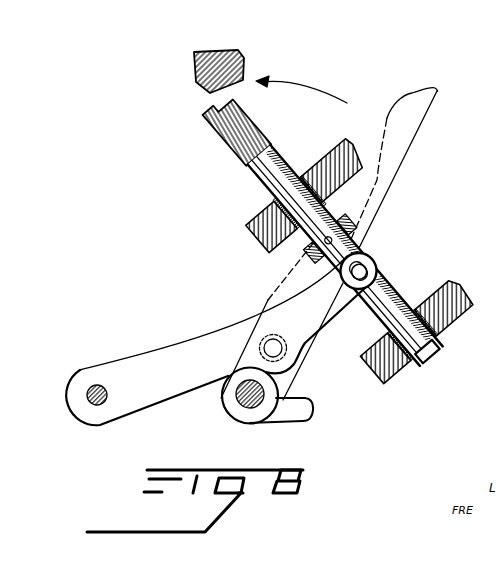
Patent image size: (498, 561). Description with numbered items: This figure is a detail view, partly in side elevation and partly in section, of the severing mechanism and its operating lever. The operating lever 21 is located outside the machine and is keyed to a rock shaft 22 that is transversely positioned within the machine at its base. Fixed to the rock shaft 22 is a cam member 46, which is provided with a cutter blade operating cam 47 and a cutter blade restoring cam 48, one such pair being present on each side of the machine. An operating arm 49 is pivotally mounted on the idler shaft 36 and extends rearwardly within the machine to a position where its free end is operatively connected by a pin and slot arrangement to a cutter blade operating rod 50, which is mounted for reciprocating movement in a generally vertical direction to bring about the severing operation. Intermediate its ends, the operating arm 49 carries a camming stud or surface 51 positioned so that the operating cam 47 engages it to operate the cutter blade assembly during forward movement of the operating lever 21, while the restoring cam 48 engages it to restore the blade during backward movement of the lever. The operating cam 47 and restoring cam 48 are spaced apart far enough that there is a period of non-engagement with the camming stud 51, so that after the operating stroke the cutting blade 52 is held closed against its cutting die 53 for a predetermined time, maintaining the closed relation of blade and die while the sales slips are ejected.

The operating lever 21 is at (383, 185).
The rock shaft 22 is at (240, 397).
The idler shaft 36 is at (95, 397).
The cam member 46 is at (273, 388).
The cutter blade operating cam 47 is at (306, 411).
The cutter blade restoring cam 48 is at (245, 332).
The operating arm 49 is at (170, 349).
The cutter blade operating rod 50 is at (281, 156).
The camming stud 51 is at (278, 340).
The cutting blade 52 is at (243, 113).
The cutting die 53 is at (243, 60).